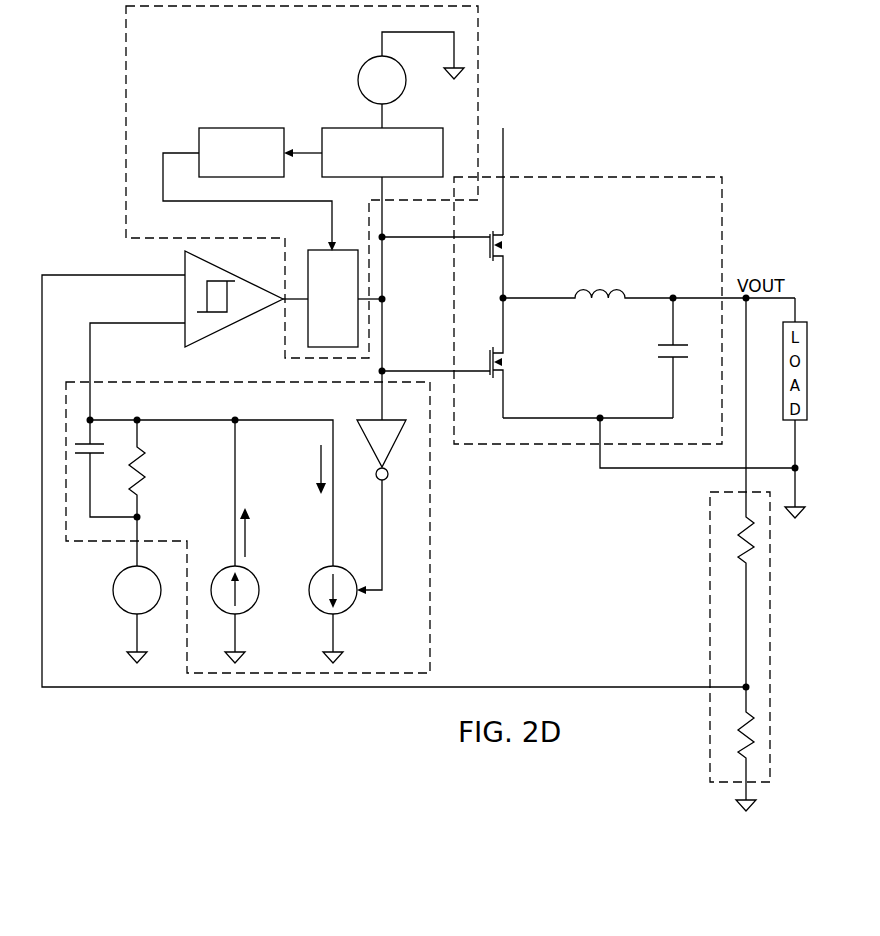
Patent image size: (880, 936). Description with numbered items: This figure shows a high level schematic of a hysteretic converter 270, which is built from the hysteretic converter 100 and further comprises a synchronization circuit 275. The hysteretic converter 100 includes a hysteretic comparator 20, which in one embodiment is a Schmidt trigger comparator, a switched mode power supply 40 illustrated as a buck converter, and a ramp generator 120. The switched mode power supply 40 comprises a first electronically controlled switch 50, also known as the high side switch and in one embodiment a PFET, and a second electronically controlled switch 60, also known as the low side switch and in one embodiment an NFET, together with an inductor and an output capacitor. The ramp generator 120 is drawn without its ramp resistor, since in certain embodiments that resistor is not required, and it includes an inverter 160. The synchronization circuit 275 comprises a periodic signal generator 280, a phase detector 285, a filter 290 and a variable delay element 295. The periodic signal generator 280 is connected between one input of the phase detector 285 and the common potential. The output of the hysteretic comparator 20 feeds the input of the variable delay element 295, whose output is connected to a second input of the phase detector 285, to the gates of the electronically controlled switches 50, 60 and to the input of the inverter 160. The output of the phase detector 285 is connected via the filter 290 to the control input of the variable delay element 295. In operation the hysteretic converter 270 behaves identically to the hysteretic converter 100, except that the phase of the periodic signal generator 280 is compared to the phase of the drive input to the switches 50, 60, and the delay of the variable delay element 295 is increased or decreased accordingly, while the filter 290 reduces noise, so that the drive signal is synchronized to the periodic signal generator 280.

The hysteretic converter 270 is at (263, 182).
The synchronization circuit 275 is at (126, 126).
The filter 290 is at (260, 128).
The phase detector 285 is at (358, 128).
The periodic signal generator 280 is at (406, 80).
The variable delay element 295 is at (326, 248).
The hysteretic comparator 20 is at (232, 323).
The hysteretic converter 100 is at (624, 280).
The switched mode power supply 40 is at (723, 227).
The first electronically controlled switch 50 is at (508, 238).
The second electronically controlled switch 60 is at (508, 370).
The inverter 160 is at (392, 448).
The ramp generator 120 is at (272, 527).